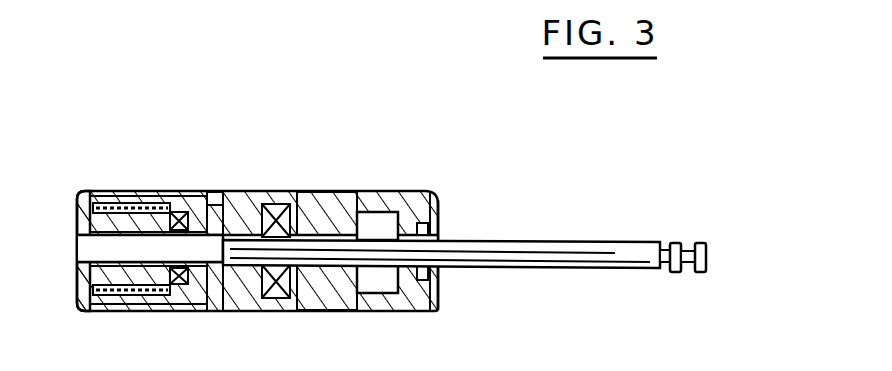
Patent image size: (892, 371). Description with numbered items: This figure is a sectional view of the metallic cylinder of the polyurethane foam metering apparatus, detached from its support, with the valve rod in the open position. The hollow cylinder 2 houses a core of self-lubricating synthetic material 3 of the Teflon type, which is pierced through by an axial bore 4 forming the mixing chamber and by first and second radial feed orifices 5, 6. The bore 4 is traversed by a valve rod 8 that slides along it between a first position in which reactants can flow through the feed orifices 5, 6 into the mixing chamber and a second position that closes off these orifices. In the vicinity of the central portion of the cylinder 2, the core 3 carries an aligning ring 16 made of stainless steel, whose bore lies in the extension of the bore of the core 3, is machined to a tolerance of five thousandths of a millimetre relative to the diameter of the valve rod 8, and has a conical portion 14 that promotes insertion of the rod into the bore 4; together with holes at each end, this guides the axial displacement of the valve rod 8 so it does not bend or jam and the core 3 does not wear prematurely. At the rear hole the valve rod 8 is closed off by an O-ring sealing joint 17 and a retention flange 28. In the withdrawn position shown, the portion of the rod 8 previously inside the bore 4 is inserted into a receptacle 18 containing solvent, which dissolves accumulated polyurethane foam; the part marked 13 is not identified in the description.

The hollow cylinder 2 is at (368, 192).
The core of self-lubricating synthetic material 3 is at (192, 215).
The axial bore 4 is at (140, 250).
The first radial feed orifice 5 is at (218, 205).
The second radial feed orifice 6 is at (218, 200).
The valve rod 8 is at (558, 247).
The end cap 13 is at (83, 192).
The conical portion 14 is at (317, 206).
The aligning ring 16 is at (272, 208).
The O-ring sealing joint 17 is at (402, 192).
The receptacle 18 is at (368, 206).
The retention flange 28 is at (440, 197).